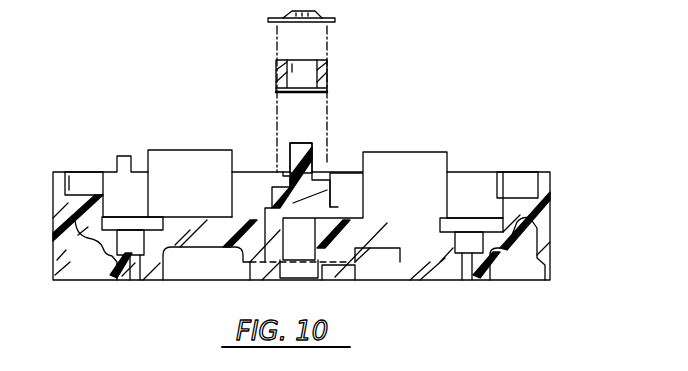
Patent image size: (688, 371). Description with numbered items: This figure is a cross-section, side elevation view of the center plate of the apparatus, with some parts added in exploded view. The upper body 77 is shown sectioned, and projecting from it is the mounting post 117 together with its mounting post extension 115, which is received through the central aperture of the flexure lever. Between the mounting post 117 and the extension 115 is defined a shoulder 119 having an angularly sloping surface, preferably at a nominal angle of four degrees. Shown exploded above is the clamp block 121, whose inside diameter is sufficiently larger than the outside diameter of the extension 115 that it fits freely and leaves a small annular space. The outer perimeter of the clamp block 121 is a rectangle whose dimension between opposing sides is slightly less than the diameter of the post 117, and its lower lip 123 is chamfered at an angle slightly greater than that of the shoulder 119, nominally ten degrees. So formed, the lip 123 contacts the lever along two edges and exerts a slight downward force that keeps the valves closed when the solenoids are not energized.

The upper body 77 is at (462, 158).
The mounting post extension 115 is at (312, 143).
The mounting post 117 is at (325, 207).
The shoulder 119 is at (283, 175).
The clamp block 121 is at (333, 68).
The lower lip 123 is at (275, 92).